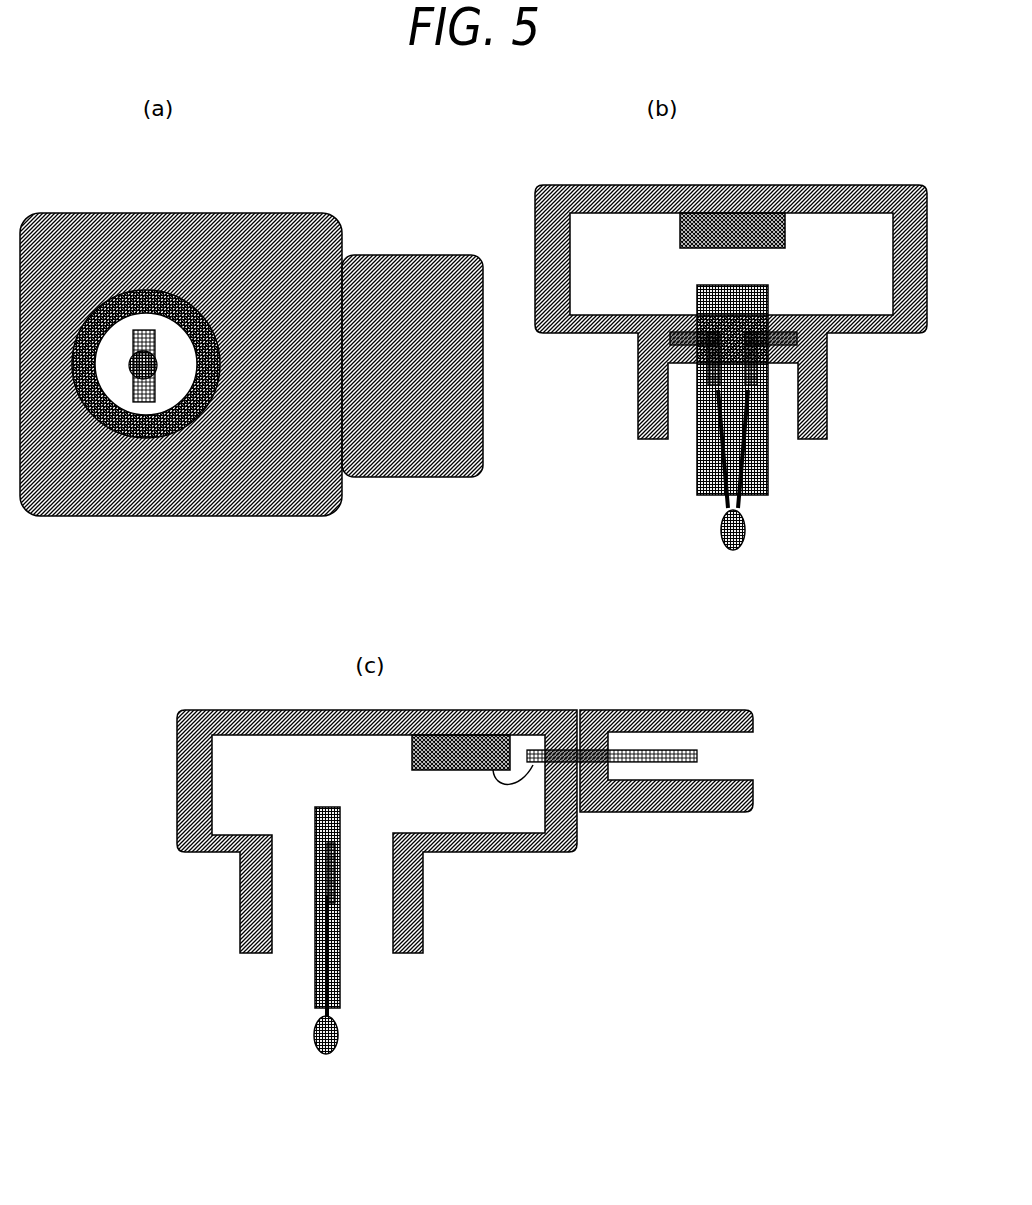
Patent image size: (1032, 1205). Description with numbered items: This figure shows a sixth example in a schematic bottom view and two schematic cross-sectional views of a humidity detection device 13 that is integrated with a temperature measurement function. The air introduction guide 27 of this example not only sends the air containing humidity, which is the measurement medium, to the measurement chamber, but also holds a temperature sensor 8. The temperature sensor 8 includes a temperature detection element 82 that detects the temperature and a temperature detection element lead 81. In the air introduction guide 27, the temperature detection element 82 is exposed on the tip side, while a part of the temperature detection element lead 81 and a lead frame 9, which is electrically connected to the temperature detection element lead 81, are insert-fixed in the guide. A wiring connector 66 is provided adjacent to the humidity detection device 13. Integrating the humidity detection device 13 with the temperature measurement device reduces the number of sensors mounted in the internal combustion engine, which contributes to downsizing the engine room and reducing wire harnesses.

The humidity detection device 13 is at (195, 212).
The wiring connector 66 is at (394, 253).
The temperature sensor 8 is at (489, 713).
The air introduction guide 27 is at (155, 395).
The lead frame 9 is at (828, 363).
The temperature detection element lead 81 is at (773, 462).
The temperature detection element 82 is at (488, 716).